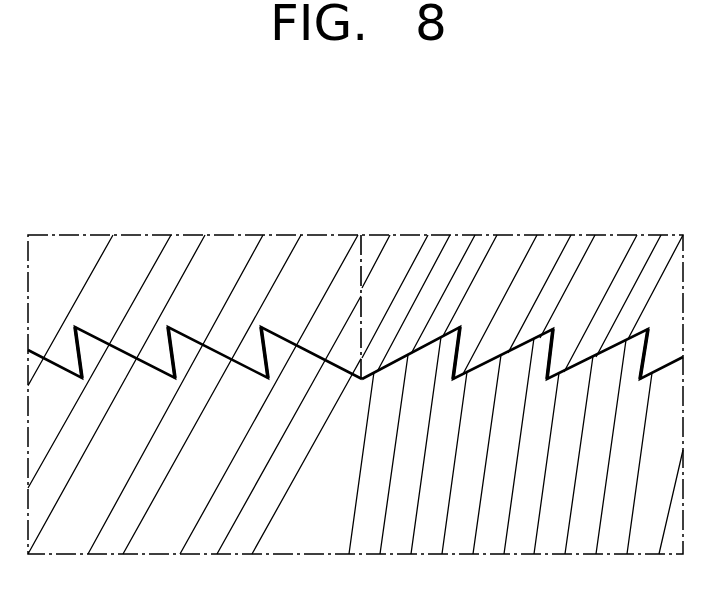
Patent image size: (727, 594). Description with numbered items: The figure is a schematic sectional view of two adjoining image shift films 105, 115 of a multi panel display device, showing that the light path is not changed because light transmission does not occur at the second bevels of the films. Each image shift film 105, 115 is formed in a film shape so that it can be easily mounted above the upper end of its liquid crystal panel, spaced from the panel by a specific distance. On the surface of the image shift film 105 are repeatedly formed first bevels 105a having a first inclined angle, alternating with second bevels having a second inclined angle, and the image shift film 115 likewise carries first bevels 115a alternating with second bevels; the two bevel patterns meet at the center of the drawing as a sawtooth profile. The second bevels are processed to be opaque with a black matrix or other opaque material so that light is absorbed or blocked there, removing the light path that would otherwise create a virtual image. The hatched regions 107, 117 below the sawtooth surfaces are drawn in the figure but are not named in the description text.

The image shift film 105 is at (198, 293).
The first bevels 105a is at (103, 332).
The first layer 107 is at (261, 347).
The image shift film 115 is at (500, 286).
The first bevels 115a is at (430, 342).
The second layer 117 is at (563, 338).